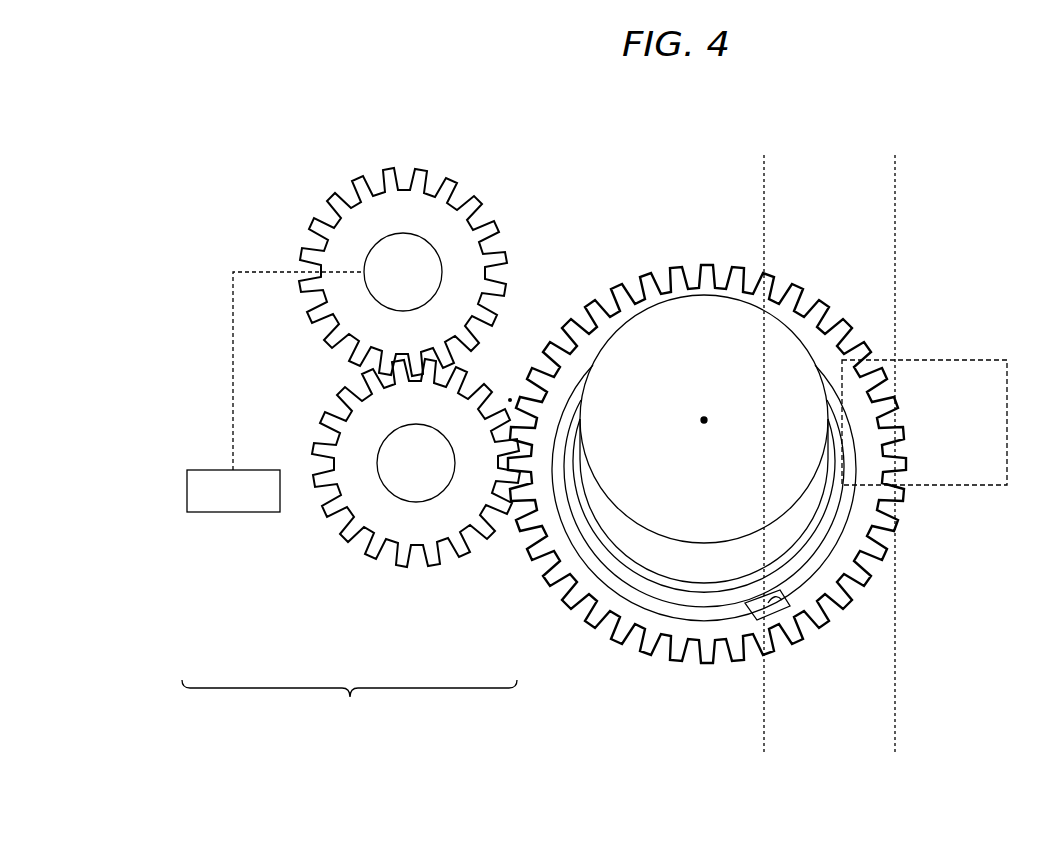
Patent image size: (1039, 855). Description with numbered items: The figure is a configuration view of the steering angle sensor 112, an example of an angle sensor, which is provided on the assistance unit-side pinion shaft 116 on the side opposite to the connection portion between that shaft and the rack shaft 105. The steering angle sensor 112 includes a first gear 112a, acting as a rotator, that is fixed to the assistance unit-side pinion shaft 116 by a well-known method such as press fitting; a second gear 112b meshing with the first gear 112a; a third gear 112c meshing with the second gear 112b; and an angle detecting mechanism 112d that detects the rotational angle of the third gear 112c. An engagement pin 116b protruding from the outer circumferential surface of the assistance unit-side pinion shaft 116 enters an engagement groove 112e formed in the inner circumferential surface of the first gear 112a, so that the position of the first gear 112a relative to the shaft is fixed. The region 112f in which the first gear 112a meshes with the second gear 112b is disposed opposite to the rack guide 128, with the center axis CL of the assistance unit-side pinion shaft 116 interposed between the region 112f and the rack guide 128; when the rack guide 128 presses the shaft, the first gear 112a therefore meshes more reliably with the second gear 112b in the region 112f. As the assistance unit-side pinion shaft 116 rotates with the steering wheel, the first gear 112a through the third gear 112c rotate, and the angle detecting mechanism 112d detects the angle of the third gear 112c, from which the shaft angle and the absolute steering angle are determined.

The steering angle sensor 112 is at (349, 705).
The first gear 112a is at (565, 600).
The second gear 112b is at (428, 567).
The third gear 112c is at (330, 332).
The angle detecting mechanism 112d is at (235, 512).
The engagement groove 112e is at (802, 622).
The region 112f is at (512, 397).
The assistance unit-side pinion shaft 116 is at (721, 333).
The engagement pin 116b is at (758, 612).
The rack shaft 105 is at (895, 192).
The rack guide 128 is at (948, 360).
The center axis CL is at (705, 420).